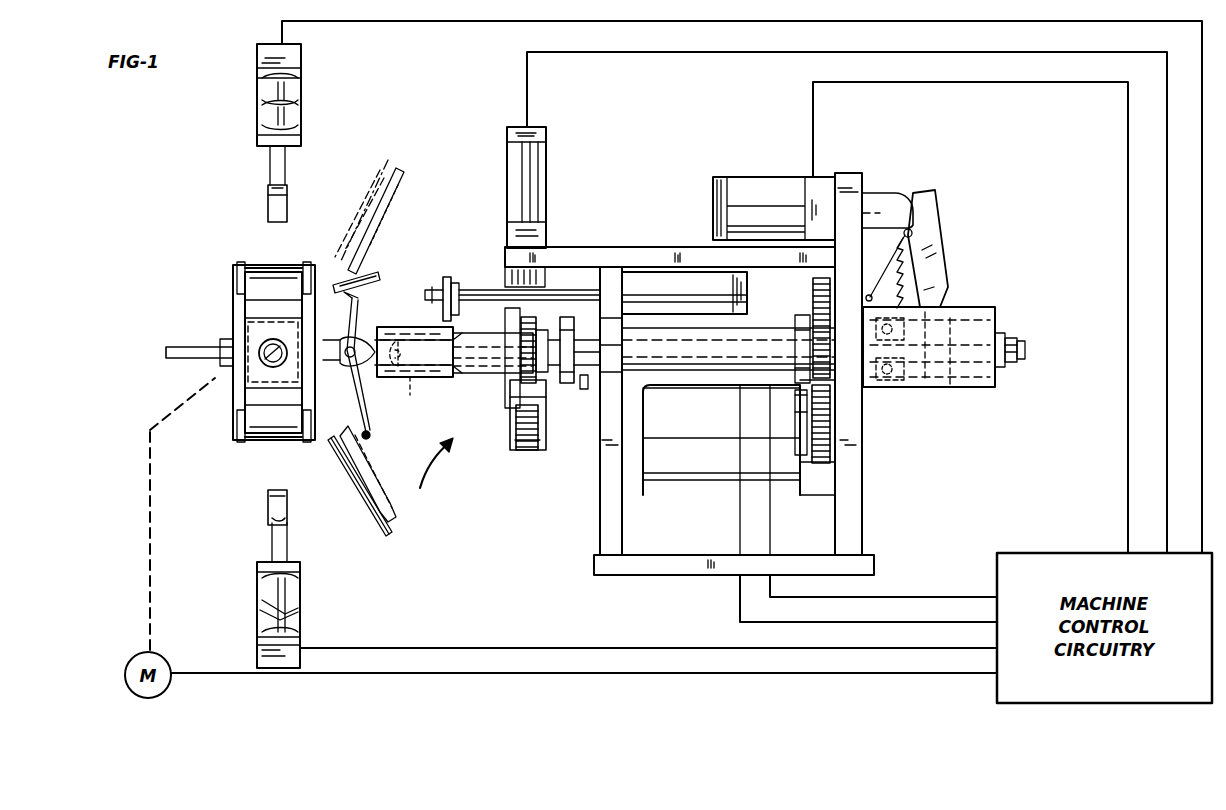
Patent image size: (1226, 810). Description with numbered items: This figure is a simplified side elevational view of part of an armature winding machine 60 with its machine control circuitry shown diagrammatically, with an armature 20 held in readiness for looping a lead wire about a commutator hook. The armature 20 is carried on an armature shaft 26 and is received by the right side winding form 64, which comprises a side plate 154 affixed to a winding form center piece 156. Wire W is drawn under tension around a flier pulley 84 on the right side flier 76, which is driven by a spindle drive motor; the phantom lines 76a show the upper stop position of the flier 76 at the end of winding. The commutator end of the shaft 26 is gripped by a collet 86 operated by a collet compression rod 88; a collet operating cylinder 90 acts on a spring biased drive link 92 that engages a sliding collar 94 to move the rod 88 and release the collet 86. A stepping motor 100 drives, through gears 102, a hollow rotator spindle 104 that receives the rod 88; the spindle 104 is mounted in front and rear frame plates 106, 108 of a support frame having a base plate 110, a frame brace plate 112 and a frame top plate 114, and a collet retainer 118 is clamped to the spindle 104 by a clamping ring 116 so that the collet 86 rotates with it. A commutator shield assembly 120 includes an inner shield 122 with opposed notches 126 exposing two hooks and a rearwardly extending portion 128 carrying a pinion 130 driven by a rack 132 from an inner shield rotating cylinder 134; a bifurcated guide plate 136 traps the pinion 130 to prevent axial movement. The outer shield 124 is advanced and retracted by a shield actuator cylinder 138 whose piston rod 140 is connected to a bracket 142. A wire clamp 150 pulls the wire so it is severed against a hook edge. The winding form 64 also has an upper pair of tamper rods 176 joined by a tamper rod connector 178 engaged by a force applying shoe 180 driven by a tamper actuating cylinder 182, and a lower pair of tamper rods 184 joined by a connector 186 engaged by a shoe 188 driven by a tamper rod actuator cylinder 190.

The armature 20 is at (214, 371).
The armature shaft 26 is at (176, 348).
The armature winding machine 60 is at (236, 163).
The right side winding form 64 is at (245, 318).
The right side flier 76 is at (378, 472).
The phantom lines 76a is at (375, 197).
The flier pulley 84 is at (356, 517).
The collet 86 is at (403, 399).
The collet compression rod 88 is at (1022, 345).
The collet operating cylinder 90 is at (768, 182).
The spring biased drive link 92 is at (940, 262).
The sliding collar 94 is at (990, 310).
The stepping motor 100 is at (706, 433).
The gears 102 is at (830, 425).
The rotator spindle 104 is at (765, 333).
The front frame plate 106 is at (612, 508).
The rear frame plate 108 is at (855, 518).
The base plate 110 is at (596, 565).
The frame brace plate 112 is at (672, 548).
The frame top plate 114 is at (688, 247).
The clamping ring 116 is at (572, 392).
The collet retainer 118 is at (540, 385).
The commutator shield assembly 120 is at (414, 314).
The inner shield 122 is at (358, 372).
The outer shield 124 is at (425, 327).
The notches 126 is at (343, 363).
The rearwardly extending portion 128 is at (466, 372).
The pinion 130 is at (523, 328).
The rack 132 is at (516, 447).
The inner shield rotating cylinder 134 is at (510, 160).
The bifurcated guide plate 136 is at (560, 398).
The shield actuator cylinder 138 is at (640, 282).
The piston rod 140 is at (460, 290).
The bracket 142 is at (445, 282).
The wire clamp 150 is at (340, 285).
The side plate 154 is at (234, 283).
The winding form center piece 156 is at (248, 382).
The upper pair of tamper rods 176 is at (240, 262).
The tamper rod connector 178 is at (284, 266).
The force applying shoe 180 is at (268, 196).
The tamper actuating cylinder 182 is at (262, 95).
The lower pair of tamper rods 184 is at (240, 442).
The tamper rod connector 186 is at (270, 438).
The force applying shoe 188 is at (268, 511).
The tamper rod actuator cylinder 190 is at (262, 608).
The wire W is at (368, 434).